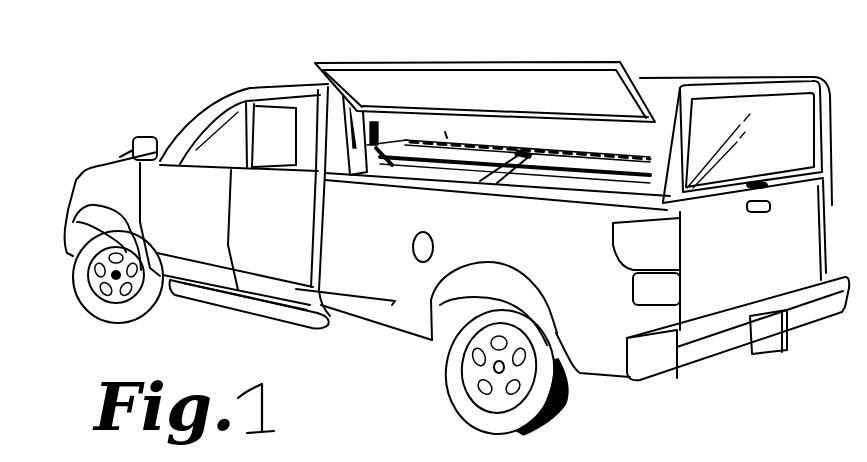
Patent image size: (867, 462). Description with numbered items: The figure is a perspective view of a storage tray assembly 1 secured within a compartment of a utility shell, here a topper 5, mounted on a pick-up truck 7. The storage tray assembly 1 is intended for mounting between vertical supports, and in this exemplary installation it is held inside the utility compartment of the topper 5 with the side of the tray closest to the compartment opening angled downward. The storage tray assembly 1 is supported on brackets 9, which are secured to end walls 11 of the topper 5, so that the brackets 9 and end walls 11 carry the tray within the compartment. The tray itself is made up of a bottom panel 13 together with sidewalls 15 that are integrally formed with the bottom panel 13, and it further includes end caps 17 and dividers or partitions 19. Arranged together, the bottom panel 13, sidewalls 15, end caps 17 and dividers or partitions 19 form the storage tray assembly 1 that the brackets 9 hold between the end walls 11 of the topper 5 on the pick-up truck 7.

The storage tray assembly 1 is at (492, 132).
The topper 5 is at (707, 78).
The pick-up truck 7 is at (235, 66).
The brackets 9 is at (387, 137).
The end walls 11 is at (385, 140).
The bottom panel 13 is at (440, 170).
The sidewalls 15 is at (497, 157).
The end caps 17 is at (383, 158).
The dividers or partitions 19 is at (507, 177).